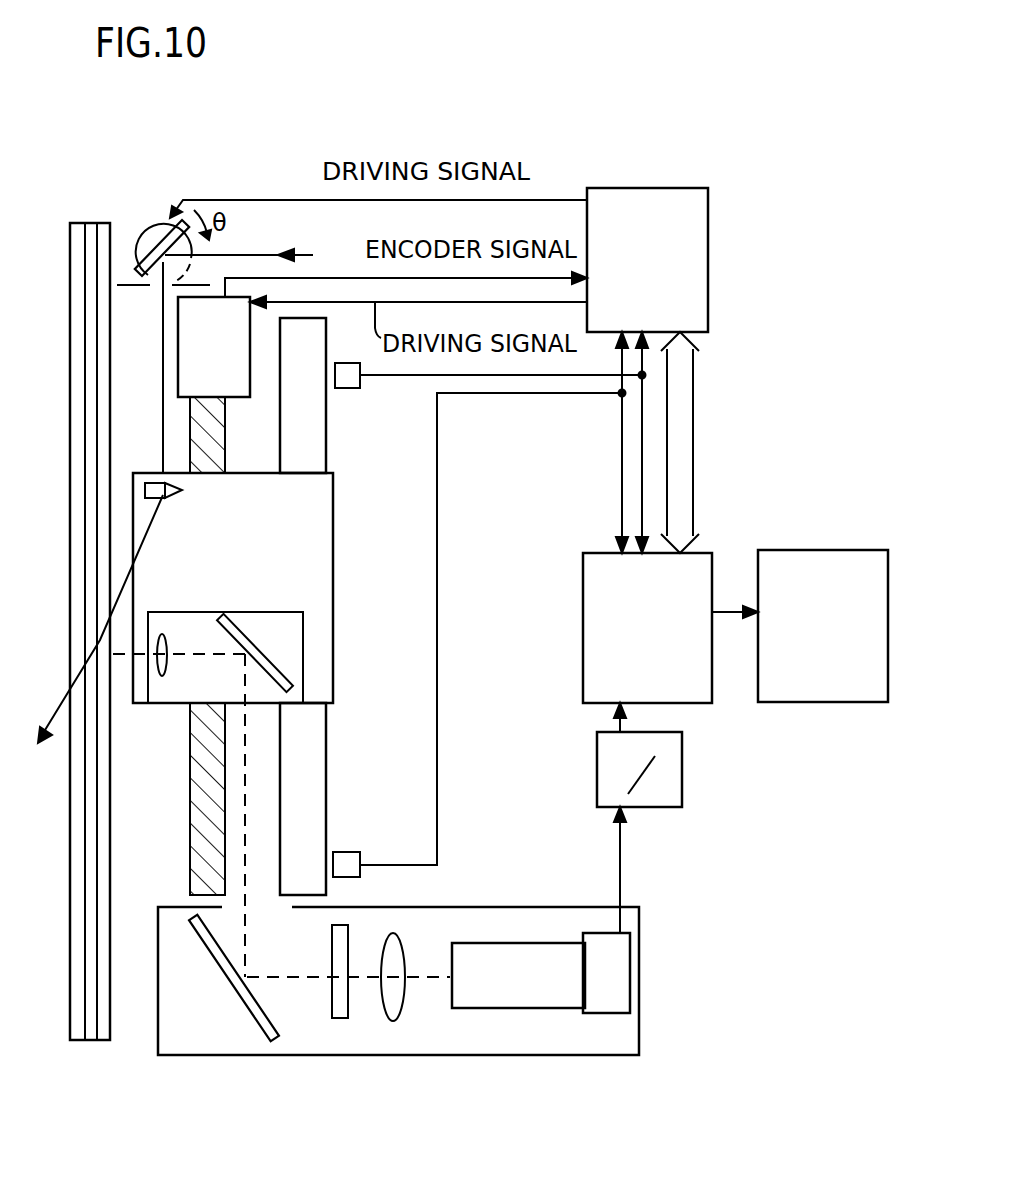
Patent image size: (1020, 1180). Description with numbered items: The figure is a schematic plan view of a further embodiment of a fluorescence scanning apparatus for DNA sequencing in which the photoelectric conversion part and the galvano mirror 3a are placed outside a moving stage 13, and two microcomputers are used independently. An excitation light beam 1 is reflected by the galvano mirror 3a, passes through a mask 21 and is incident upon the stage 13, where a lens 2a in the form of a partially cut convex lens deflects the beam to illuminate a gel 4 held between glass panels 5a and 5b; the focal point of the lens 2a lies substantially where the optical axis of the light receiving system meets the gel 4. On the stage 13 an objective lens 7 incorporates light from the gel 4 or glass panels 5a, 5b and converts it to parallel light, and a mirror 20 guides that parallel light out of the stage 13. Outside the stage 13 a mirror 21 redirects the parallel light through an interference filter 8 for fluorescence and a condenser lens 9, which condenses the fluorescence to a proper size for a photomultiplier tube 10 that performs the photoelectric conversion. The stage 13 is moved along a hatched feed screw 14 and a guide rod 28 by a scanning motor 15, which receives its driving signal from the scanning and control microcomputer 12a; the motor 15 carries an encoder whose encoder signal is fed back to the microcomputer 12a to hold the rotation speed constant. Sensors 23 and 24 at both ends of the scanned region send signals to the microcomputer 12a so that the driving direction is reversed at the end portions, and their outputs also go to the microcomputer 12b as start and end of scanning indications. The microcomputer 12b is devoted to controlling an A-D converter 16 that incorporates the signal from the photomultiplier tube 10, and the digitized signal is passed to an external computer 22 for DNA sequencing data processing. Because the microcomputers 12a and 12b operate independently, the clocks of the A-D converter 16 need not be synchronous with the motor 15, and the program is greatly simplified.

The excitation light beam 1 is at (237, 255).
The lens 2a is at (172, 494).
The galvano mirror 3a is at (155, 224).
The gel 4 is at (89, 223).
The glass panel 5a is at (110, 398).
The glass panel 5b is at (69, 473).
The objective lens 7 is at (163, 677).
The interference filter 8 is at (343, 1020).
The condenser lens 9 is at (405, 1022).
The photomultiplier tube 10 is at (517, 1010).
The scanning and control microcomputer 12a is at (653, 188).
The microcomputer 12b is at (713, 578).
The moving stage 13 is at (333, 492).
The feed screw 14 is at (189, 857).
The scanning motor 15 is at (250, 357).
The A-D converter 16 is at (683, 752).
The mirror 20 is at (273, 660).
The mirror 21 is at (133, 288).
The external computer 22 is at (807, 550).
The sensor 23 is at (347, 388).
The sensor 24 is at (338, 852).
The guide rod 28 is at (315, 727).